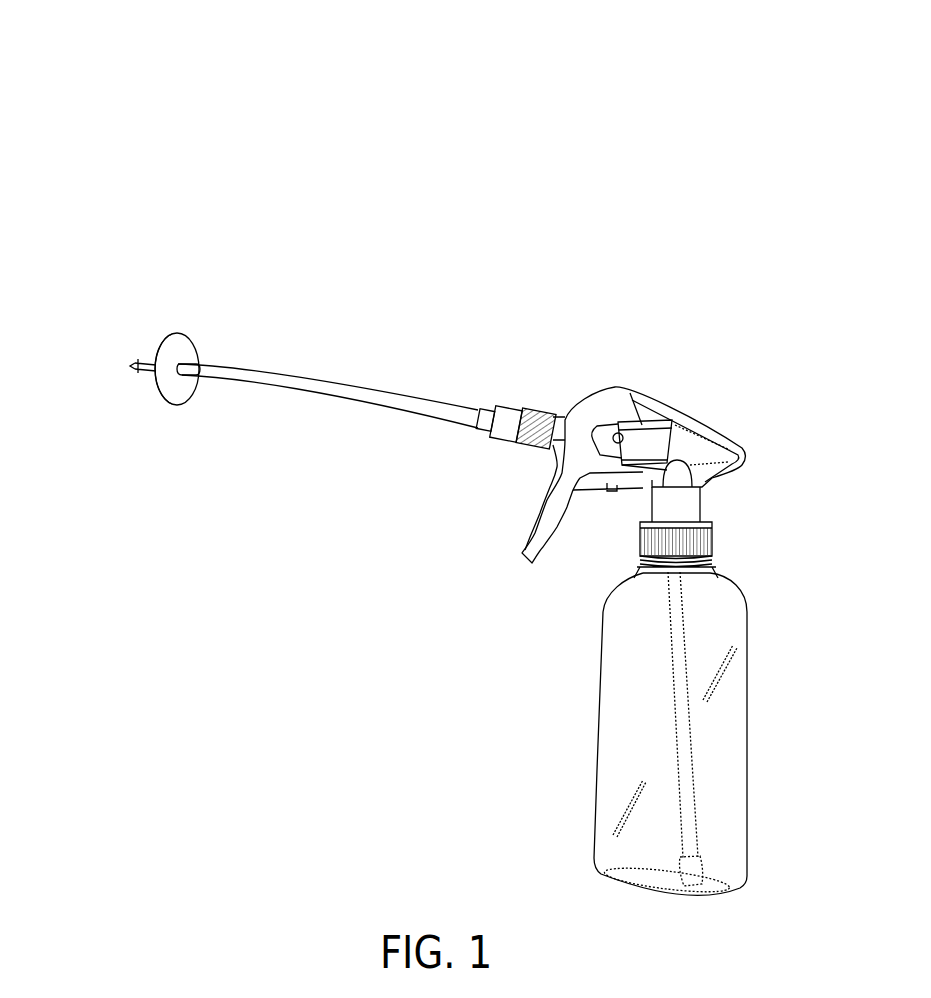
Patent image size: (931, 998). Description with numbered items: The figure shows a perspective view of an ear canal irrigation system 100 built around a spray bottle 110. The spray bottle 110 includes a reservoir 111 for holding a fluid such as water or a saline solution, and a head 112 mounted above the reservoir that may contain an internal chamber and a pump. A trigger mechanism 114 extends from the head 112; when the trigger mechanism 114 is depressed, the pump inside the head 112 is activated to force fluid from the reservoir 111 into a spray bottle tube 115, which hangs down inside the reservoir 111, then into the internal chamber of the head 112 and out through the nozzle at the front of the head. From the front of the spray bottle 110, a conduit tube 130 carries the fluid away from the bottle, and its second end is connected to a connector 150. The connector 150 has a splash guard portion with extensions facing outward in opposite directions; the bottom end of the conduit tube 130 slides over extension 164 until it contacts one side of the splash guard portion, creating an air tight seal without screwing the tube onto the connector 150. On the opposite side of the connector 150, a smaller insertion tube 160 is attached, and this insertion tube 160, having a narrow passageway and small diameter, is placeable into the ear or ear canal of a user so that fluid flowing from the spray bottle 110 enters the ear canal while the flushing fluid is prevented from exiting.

The ear canal irrigation system 100 is at (148, 92).
The spray bottle 110 is at (735, 363).
The reservoir 111 is at (548, 707).
The head 112 is at (622, 340).
The trigger mechanism 114 is at (442, 602).
The spray bottle tube 115 is at (580, 647).
The conduit tube 130 is at (403, 392).
The connector 150 is at (158, 333).
The insertion tube 160 is at (140, 378).
The extension 164 is at (196, 357).